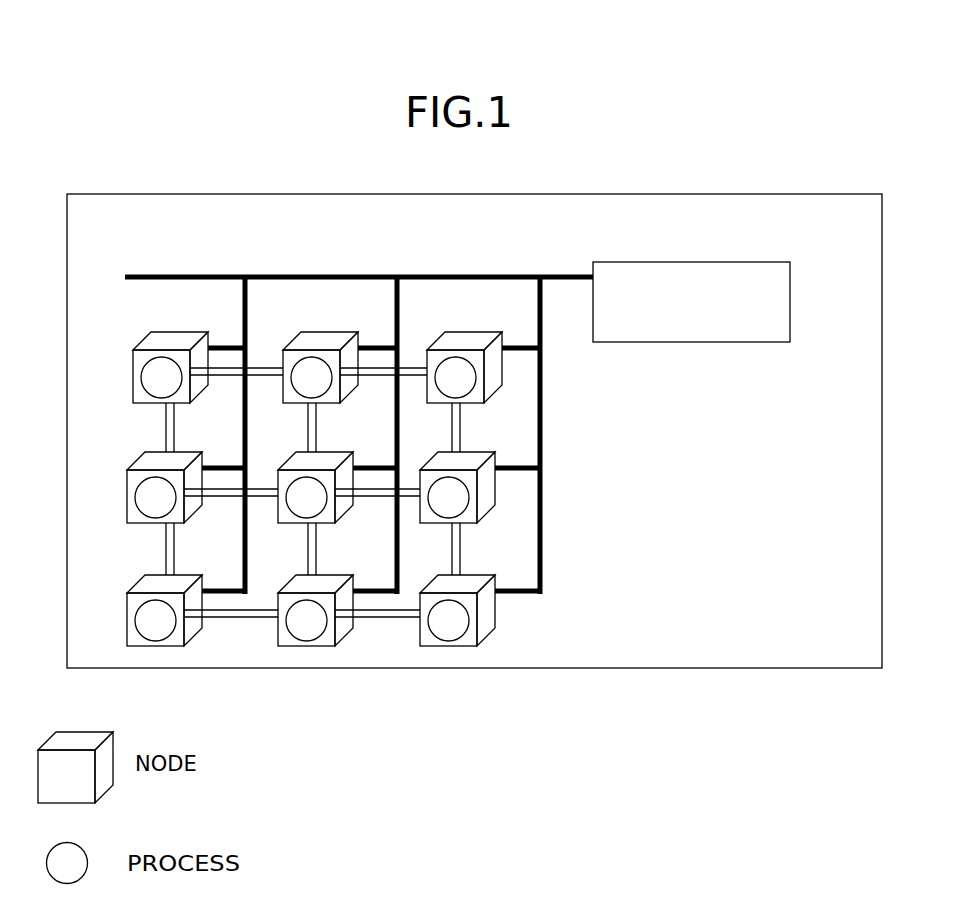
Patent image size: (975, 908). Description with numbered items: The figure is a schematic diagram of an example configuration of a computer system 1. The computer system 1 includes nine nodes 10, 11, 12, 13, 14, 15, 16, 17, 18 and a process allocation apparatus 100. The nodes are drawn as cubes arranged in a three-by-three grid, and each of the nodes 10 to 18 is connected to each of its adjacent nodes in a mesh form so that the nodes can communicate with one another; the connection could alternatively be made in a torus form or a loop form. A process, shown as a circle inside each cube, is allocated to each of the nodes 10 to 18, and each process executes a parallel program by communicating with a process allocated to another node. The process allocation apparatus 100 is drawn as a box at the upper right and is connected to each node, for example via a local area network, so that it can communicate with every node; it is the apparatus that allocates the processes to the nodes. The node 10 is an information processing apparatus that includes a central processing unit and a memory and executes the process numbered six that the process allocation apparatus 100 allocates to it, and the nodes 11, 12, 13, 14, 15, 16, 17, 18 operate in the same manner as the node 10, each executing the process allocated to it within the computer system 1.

The computer system 1 is at (474, 418).
The process allocation apparatus 100 is at (790, 301).
The node 10 is at (188, 331).
The node 11 is at (338, 331).
The node 12 is at (482, 331).
The node 13 is at (182, 451).
The node 14 is at (333, 451).
The node 15 is at (475, 451).
The node 16 is at (182, 574).
The node 17 is at (333, 574).
The node 18 is at (475, 574).